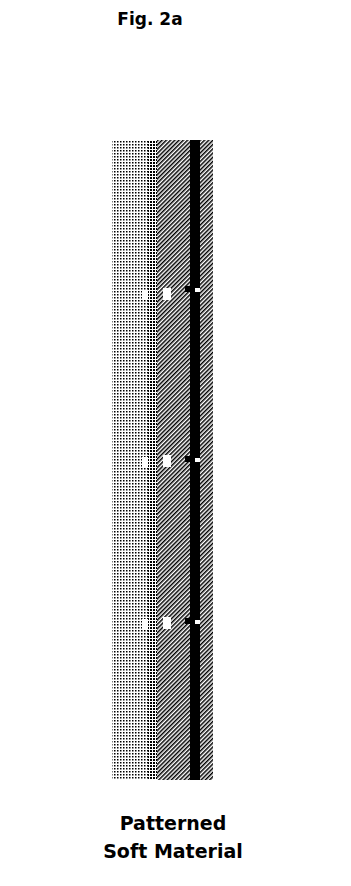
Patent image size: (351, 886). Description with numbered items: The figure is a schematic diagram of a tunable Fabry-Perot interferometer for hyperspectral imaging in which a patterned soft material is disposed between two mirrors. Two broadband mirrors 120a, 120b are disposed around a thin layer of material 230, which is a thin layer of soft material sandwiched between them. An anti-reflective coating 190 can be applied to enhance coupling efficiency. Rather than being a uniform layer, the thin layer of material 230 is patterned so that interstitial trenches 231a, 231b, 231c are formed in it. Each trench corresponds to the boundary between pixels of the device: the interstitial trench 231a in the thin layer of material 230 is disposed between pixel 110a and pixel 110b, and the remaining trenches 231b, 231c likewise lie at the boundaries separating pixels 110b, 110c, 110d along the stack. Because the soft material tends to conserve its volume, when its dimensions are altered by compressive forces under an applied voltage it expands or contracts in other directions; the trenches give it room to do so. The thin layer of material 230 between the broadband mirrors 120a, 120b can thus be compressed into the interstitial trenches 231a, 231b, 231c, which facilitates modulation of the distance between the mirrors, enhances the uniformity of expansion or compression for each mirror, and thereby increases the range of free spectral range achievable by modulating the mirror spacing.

The anti-reflective coating 190 is at (120, 363).
The broadband mirror 120a is at (158, 160).
The broadband mirror 120b is at (178, 160).
The thin layer of material 230 is at (167, 210).
The interstitial trench 231a is at (167, 293).
The interstitial trench 231b is at (167, 462).
The interstitial trench 231c is at (167, 626).
The pixel 110a is at (197, 213).
The pixel 110b is at (200, 363).
The pixel 110c is at (200, 528).
The pixel 110d is at (200, 697).